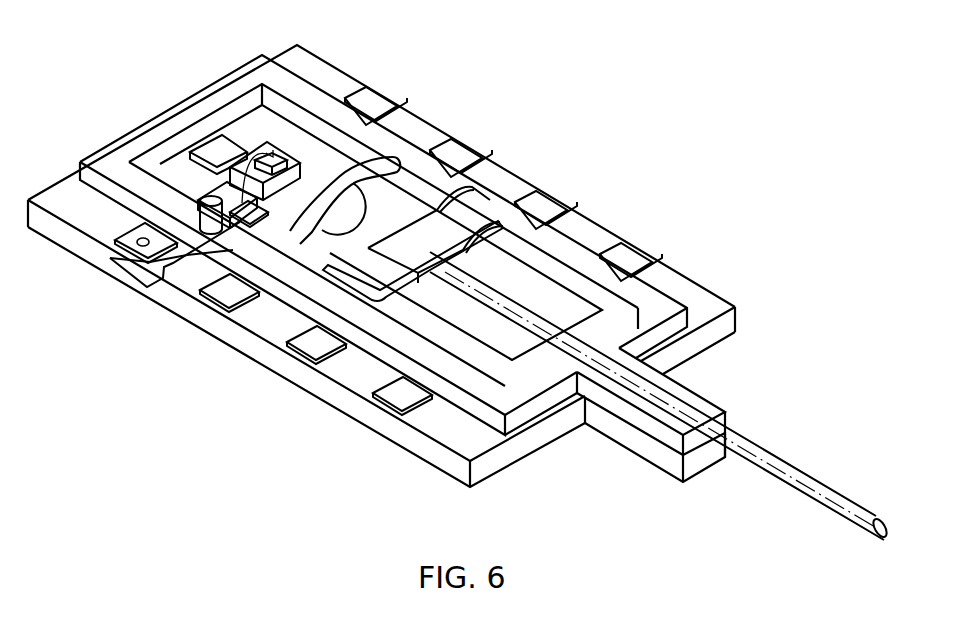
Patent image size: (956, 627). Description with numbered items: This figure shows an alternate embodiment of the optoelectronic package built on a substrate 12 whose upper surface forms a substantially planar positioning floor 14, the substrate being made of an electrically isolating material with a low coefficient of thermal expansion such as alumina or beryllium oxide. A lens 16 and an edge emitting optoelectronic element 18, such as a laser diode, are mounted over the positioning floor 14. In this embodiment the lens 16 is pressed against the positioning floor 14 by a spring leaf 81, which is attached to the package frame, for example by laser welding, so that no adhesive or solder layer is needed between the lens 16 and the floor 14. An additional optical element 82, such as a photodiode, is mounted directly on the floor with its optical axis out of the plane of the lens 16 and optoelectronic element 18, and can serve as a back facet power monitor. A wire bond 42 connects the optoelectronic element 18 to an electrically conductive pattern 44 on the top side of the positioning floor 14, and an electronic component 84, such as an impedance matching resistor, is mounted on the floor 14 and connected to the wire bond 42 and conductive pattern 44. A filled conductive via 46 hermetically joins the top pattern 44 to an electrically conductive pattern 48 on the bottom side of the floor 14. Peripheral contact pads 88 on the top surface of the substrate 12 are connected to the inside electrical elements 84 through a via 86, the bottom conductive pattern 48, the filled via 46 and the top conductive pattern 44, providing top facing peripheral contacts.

The substrate 12 is at (737, 320).
The positioning floor 14 is at (283, 130).
The lens 16 is at (390, 200).
The edge emitting optoelectronic element 18 is at (322, 150).
The wire bond 42 is at (258, 148).
The electrically conductive pattern 44 is at (246, 224).
The filled conductive via 46 is at (213, 232).
The electrically conductive pattern 48 is at (150, 265).
The spring leaf 81 is at (398, 188).
The optical element 82 is at (213, 148).
The electronic component 84 is at (213, 187).
The via 86 is at (113, 257).
The peripheral contact pads 88 is at (118, 229).